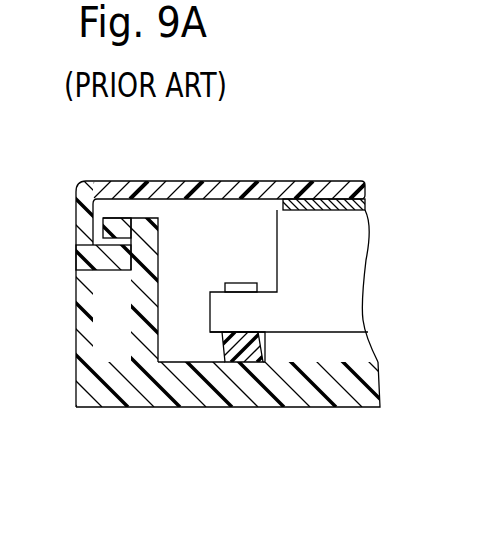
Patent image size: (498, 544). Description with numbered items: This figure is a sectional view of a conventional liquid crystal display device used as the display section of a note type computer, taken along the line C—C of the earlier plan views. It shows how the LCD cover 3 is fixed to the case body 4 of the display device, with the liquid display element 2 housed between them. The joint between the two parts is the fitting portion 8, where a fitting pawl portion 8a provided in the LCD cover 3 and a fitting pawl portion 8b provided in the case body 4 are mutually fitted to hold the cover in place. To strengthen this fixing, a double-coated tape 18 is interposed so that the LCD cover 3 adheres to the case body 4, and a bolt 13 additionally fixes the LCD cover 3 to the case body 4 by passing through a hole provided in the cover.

The liquid display element 2 is at (345, 277).
The LCD cover 3 is at (308, 180).
The case body 4 is at (200, 408).
The fitting portion 8 is at (87, 317).
The fitting pawl portion 8a is at (80, 255).
The fitting pawl portion 8b is at (127, 220).
The bolt 13 is at (240, 281).
The double-coated tape 18 is at (365, 202).